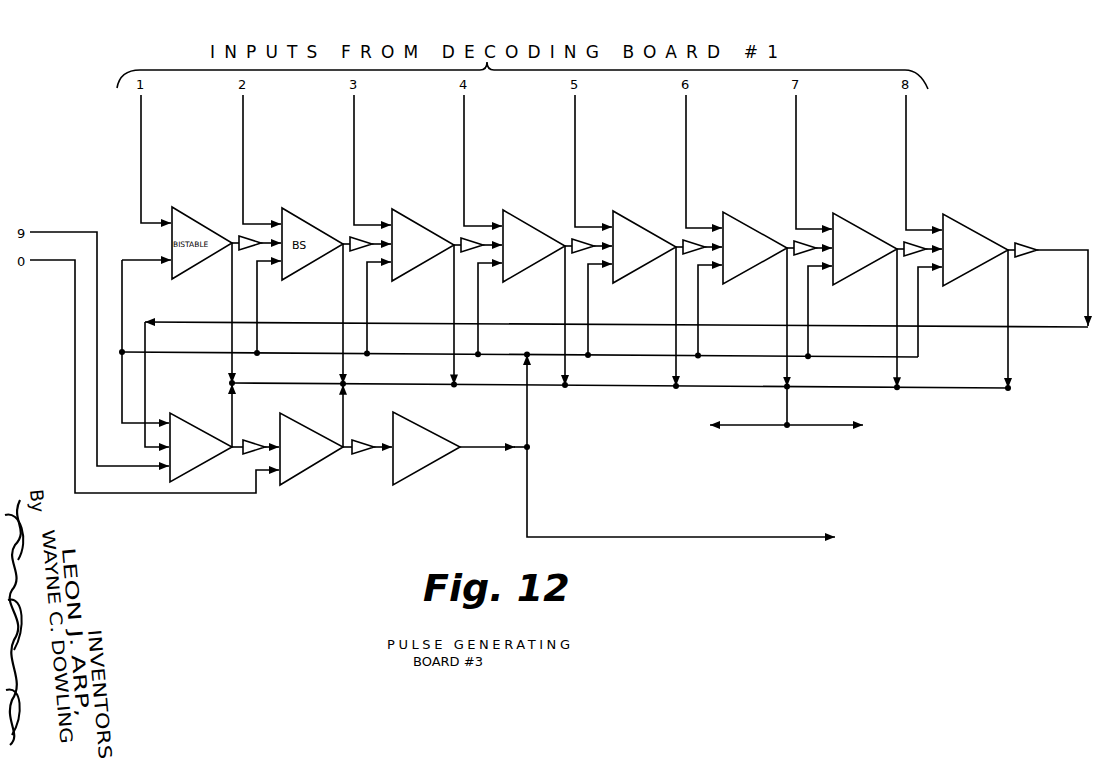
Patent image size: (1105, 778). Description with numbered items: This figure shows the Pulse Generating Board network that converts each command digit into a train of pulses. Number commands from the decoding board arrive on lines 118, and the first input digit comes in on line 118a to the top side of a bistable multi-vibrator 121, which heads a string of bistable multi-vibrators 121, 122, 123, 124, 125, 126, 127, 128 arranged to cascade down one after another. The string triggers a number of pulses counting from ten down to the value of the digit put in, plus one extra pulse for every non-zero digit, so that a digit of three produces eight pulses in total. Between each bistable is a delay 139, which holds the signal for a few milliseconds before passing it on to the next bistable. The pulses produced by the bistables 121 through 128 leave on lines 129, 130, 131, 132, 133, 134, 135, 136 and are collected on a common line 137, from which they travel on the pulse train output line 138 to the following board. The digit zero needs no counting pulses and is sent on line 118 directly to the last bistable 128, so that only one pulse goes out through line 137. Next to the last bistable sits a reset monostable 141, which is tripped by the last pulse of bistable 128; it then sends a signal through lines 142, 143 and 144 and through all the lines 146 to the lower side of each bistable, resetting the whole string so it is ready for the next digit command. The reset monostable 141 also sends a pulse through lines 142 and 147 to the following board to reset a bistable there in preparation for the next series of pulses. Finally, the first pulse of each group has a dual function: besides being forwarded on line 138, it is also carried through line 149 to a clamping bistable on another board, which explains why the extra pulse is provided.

The line 118 is at (141, 128).
The line 118a is at (354, 128).
The bistable multi-vibrator 121 is at (427, 226).
The bistable multi-vibrator 122 is at (538, 228).
The bistable multi-vibrator 123 is at (648, 230).
The bistable multi-vibrator 124 is at (758, 231).
The bistable multi-vibrator 125 is at (868, 232).
The bistable multi-vibrator 126 is at (978, 233).
The bistable multi-vibrator 127 is at (190, 413).
The bistable multi-vibrator 128 is at (303, 425).
The line 129 is at (454, 293).
The line 130 is at (565, 300).
The line 131 is at (676, 292).
The line 132 is at (787, 300).
The line 133 is at (897, 300).
The line 134 is at (1008, 302).
The line 135 is at (232, 414).
The line 136 is at (343, 412).
The line 137 is at (620, 388).
The pulse train output line 138 is at (808, 425).
The delay 139 is at (243, 236).
The reset monostable 141 is at (425, 470).
The line 142 is at (475, 450).
The line 143 is at (527, 407).
The line 144 is at (545, 352).
The line 146 is at (592, 314).
The line 147 is at (630, 537).
The line 149 is at (760, 426).